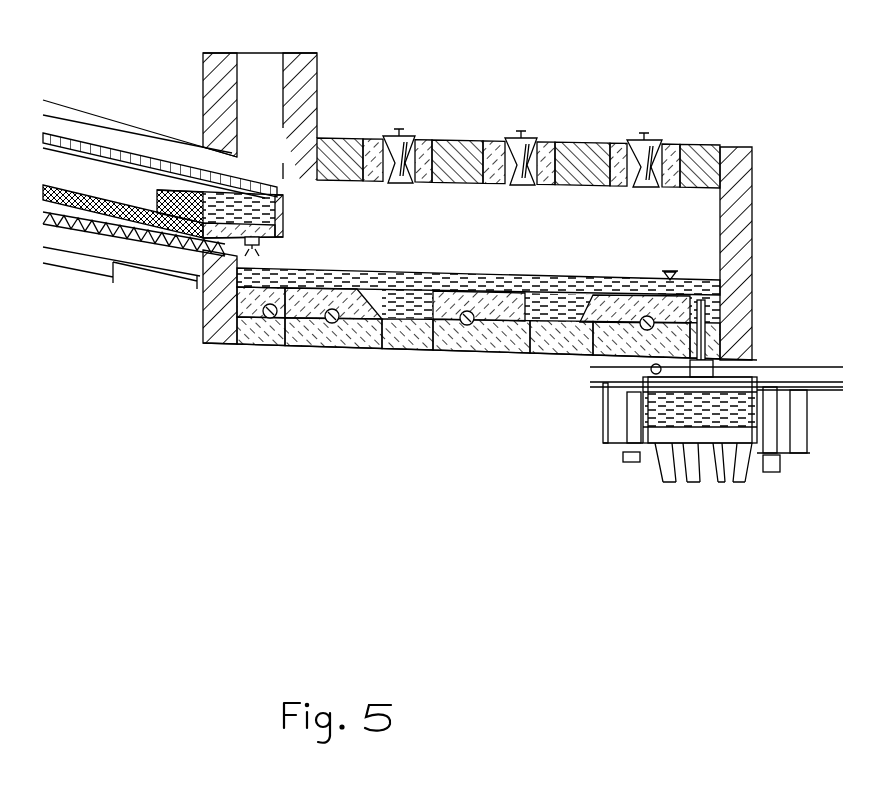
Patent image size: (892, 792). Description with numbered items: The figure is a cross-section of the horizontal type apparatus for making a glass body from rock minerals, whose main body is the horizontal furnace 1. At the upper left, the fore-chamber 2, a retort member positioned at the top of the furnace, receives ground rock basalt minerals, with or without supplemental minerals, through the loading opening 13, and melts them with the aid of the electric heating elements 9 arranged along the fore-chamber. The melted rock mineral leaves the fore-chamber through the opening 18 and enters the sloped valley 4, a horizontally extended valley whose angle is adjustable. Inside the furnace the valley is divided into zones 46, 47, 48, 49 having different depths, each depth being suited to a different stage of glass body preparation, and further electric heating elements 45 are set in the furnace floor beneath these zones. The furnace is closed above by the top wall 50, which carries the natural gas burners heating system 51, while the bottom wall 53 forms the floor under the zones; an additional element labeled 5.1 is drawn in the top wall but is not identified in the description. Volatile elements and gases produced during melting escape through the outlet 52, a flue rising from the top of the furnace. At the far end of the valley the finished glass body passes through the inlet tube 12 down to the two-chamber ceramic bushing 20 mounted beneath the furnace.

The horizontal furnace 1 is at (745, 217).
The fore-chamber 2 is at (146, 133).
The sloped valley 4 is at (40, 191).
The electric heating elements 9 is at (36, 211).
The inlet tube 12 is at (712, 310).
The loading opening 13 is at (52, 165).
The opening 18 is at (267, 249).
The two-chamber ceramic bushing 20 is at (783, 435).
The electric heating elements 45 is at (256, 344).
The zone with different depth 46 is at (294, 345).
The zone with different depth 47 is at (405, 307).
The zone with different depth 48 is at (485, 350).
The zone with different depth 49 is at (572, 305).
The top wall of the furnace 50 is at (462, 139).
The natural gas burners heating system 51 is at (386, 145).
The stopper 5.1 is at (632, 150).
The volatile elements/gases outlet 52 is at (255, 68).
The bottom wall of the furnace 53 is at (245, 318).